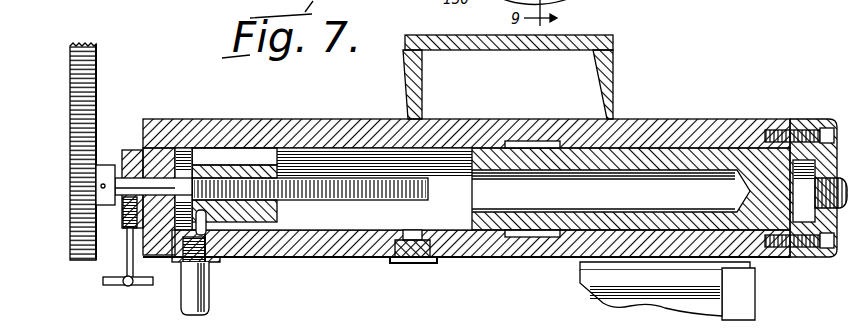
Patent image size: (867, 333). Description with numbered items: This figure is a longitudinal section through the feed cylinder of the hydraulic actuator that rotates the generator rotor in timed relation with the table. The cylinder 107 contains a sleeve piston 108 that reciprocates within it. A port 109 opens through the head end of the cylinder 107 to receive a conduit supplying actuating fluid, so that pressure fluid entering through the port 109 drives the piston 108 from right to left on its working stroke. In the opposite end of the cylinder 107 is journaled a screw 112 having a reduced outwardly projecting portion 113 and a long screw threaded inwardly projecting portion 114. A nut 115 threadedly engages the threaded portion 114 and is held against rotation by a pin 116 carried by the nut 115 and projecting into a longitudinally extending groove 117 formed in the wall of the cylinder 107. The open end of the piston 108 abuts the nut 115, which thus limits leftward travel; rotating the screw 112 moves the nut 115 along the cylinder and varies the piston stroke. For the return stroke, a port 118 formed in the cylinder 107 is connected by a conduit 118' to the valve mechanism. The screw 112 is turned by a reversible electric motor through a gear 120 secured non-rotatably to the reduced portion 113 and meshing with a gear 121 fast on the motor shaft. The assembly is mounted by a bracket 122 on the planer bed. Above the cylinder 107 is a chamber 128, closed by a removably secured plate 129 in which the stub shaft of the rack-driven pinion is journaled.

The cylinder 107 is at (560, 257).
The sleeve piston 108 is at (668, 160).
The port 109 is at (815, 142).
The screw 112 is at (190, 148).
The reduced outwardly projecting portion 113 is at (121, 178).
The screw threaded inwardly projecting portion 114 is at (252, 165).
The nut 115 is at (262, 222).
The pin 116 is at (245, 230).
The longitudinally extending groove 117 is at (341, 236).
The port 118 is at (174, 274).
The conduit 118' is at (223, 291).
The gear 120 is at (80, 258).
The gear 121 is at (92, 42).
The bracket 122 is at (738, 302).
The chamber 128 is at (592, 70).
The plate 129 is at (503, 49).